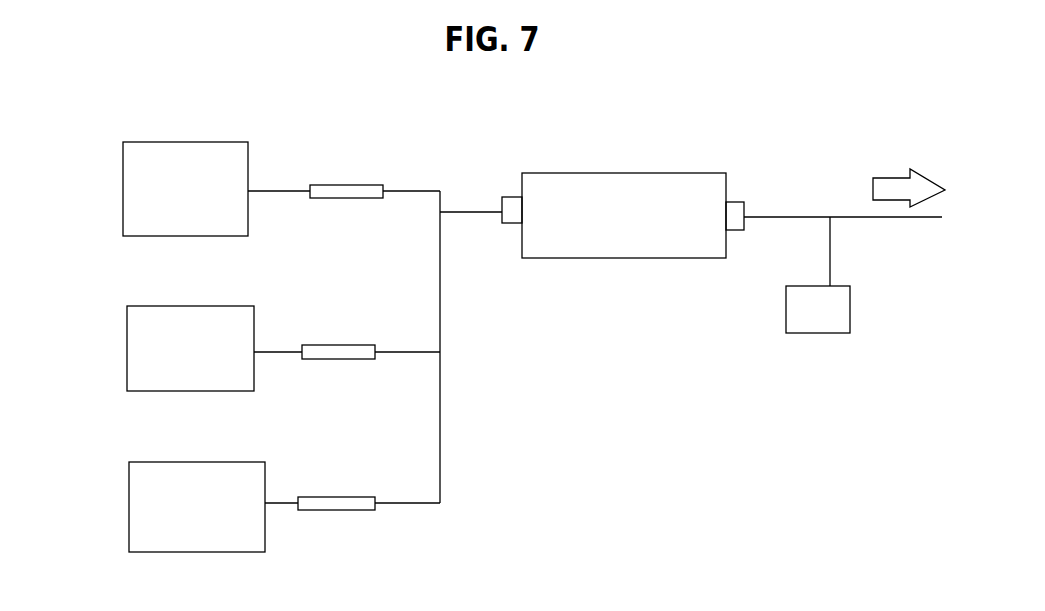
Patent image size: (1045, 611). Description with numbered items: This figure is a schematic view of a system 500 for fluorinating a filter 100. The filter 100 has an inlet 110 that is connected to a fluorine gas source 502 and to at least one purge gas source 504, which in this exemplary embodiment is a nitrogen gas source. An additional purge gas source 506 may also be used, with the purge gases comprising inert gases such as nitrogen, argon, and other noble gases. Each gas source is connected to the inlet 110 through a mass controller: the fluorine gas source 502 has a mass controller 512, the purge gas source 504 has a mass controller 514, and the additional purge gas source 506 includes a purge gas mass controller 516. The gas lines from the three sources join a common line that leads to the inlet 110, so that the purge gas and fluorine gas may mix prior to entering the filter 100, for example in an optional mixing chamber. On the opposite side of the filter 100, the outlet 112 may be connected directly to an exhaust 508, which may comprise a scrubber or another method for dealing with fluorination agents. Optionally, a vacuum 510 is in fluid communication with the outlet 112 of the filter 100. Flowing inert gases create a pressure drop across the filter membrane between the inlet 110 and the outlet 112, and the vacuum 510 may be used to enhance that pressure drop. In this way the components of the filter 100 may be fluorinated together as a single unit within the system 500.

The system 500 is at (497, 383).
The fluorine gas source 502 is at (118, 213).
The purge gas source 504 is at (112, 340).
The additional purge gas source 506 is at (115, 506).
The mass controller 512 is at (349, 170).
The mass controller 514 is at (325, 345).
The purge gas mass controller 516 is at (322, 497).
The filter 100 is at (567, 258).
The inlet 110 is at (503, 235).
The outlet 112 is at (742, 233).
The vacuum 510 is at (803, 333).
The exhaust 508 is at (909, 170).